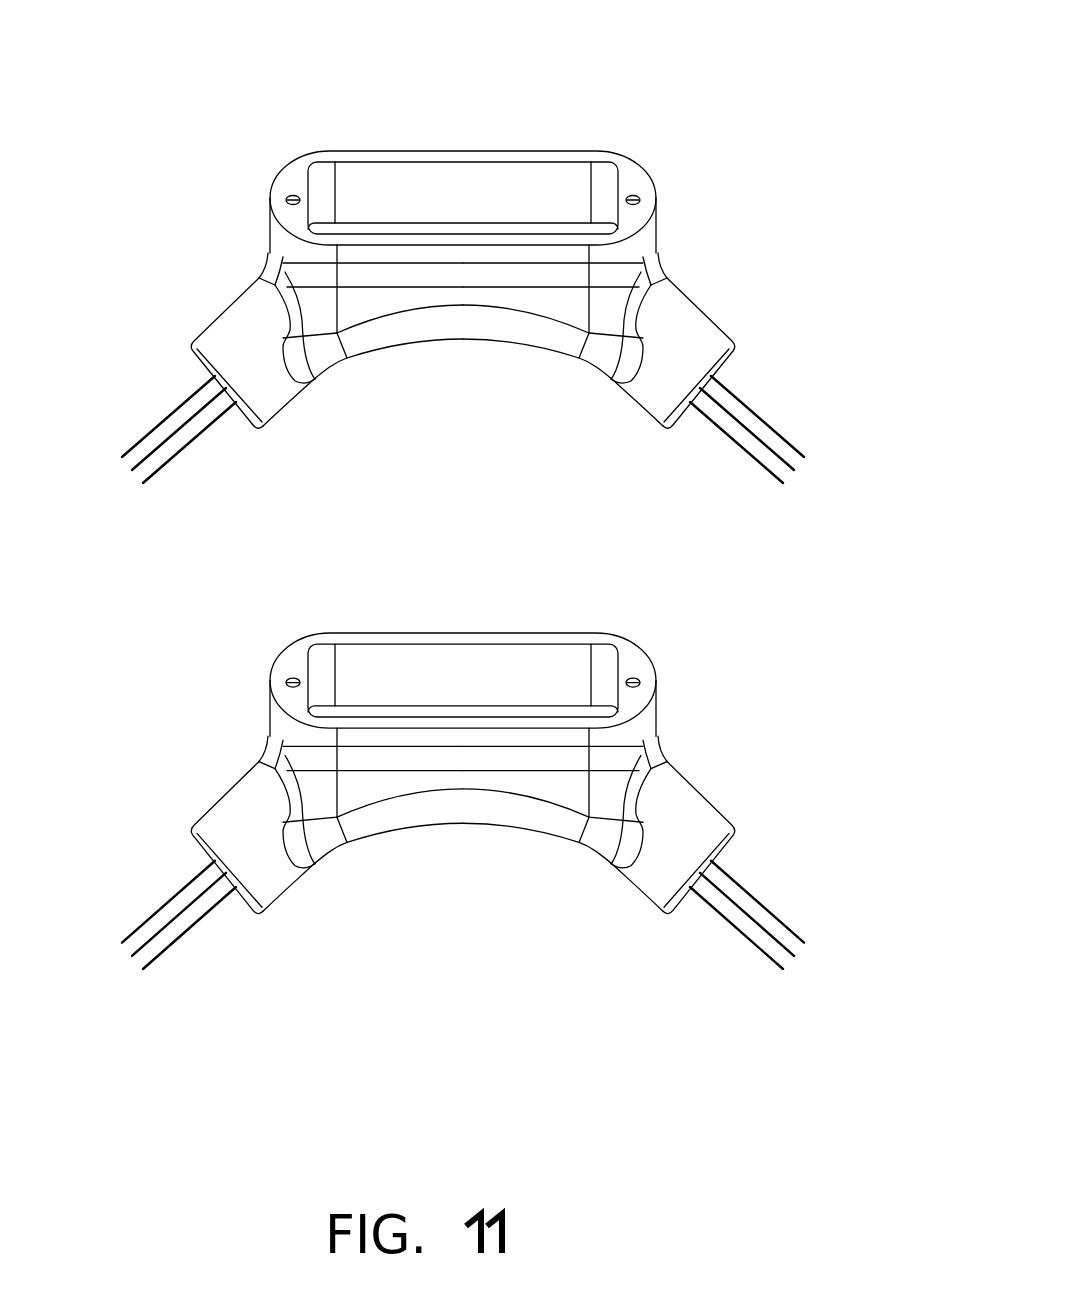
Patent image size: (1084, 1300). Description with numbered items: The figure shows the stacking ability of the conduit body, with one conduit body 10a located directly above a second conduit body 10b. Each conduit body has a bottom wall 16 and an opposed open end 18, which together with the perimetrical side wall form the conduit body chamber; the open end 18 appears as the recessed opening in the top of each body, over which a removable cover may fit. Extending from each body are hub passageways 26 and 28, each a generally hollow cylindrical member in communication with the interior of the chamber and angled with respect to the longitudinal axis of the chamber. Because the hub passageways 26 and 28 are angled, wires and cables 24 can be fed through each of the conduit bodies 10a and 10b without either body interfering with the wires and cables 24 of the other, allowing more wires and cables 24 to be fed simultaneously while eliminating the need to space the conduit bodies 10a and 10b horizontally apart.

The conduit body 10a is at (655, 96).
The conduit body 10b is at (712, 648).
The bottom wall 16 is at (463, 341).
The open end 18 is at (462, 188).
The wires and cables 24 is at (153, 427).
The hub passageway 26 is at (187, 359).
The hub passageway 28 is at (739, 358).